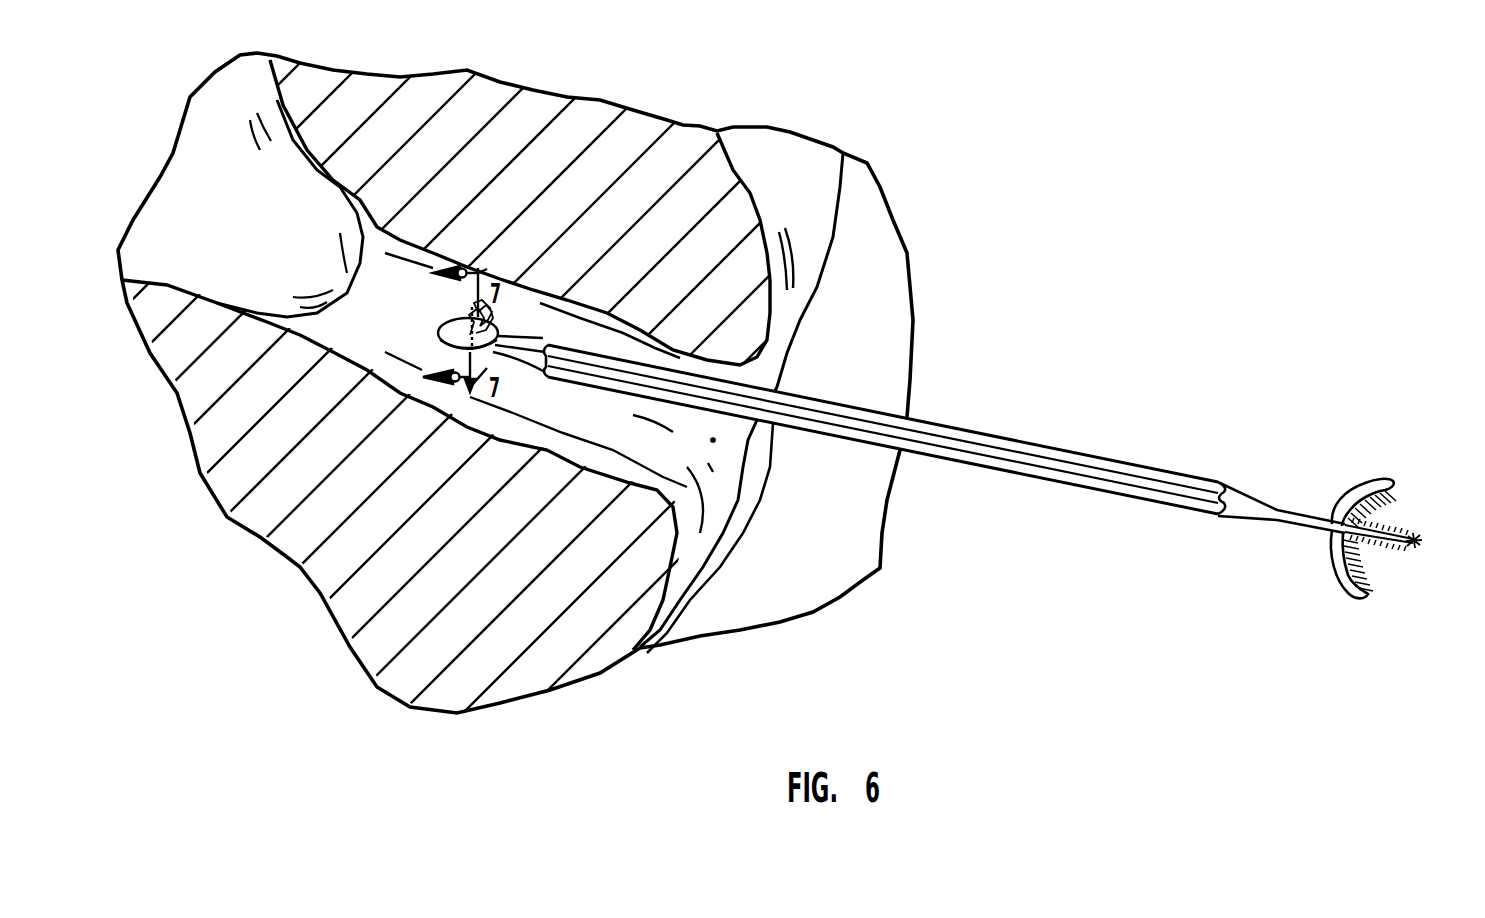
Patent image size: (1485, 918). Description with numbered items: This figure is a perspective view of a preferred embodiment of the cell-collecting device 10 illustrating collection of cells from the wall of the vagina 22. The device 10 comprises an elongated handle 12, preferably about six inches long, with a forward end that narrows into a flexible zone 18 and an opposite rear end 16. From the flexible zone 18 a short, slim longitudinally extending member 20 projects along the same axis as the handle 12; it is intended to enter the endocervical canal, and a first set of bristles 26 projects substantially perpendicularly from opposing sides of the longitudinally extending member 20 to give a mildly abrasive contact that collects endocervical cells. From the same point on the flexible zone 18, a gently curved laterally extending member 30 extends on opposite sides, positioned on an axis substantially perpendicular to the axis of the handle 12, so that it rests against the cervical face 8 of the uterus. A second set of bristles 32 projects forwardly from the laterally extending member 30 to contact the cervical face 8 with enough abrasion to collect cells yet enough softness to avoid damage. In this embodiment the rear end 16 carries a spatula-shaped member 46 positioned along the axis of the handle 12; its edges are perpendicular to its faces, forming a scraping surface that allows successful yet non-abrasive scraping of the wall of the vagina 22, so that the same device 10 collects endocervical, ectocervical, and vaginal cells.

The cervical face 8 is at (347, 273).
The device 10 is at (1008, 474).
The handle 12 is at (930, 430).
The rear end 16 is at (587, 353).
The flexible zone 18 is at (1302, 510).
The longitudinally extending member 20 is at (1413, 538).
The vagina 22 is at (407, 293).
The first set of bristles 26 is at (1412, 547).
The laterally extending member 30 is at (1363, 487).
The second set of bristles 32 is at (1380, 587).
The spatula-shaped member 46 is at (450, 328).